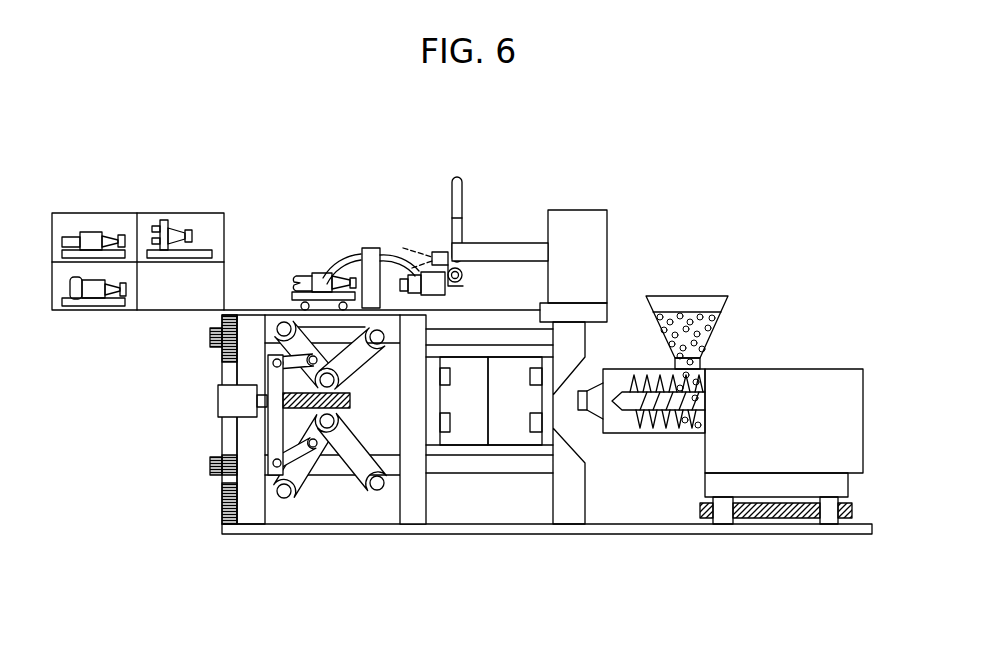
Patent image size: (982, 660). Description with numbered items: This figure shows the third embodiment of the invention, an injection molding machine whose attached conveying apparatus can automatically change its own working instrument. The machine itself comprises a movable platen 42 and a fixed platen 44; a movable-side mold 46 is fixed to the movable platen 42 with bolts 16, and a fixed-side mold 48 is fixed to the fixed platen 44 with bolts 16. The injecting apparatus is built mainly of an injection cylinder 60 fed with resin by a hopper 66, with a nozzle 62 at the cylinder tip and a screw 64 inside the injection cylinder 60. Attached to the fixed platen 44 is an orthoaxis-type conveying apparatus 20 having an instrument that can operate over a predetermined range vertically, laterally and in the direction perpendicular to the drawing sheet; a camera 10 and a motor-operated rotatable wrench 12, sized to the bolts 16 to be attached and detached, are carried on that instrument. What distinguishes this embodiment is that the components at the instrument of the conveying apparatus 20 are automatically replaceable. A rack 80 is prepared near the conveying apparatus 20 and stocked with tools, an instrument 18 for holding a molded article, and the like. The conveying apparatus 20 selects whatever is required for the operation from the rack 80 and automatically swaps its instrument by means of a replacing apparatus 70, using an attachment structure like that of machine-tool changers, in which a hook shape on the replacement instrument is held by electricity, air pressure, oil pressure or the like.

The camera 10 is at (440, 251).
The motor-operated rotatable wrench 12 is at (424, 294).
The bolts 16 is at (450, 376).
The instrument for holding a molded article 18 is at (316, 274).
The orthoaxis-type conveying apparatus 20 is at (580, 210).
The movable platen 42 is at (412, 513).
The fixed platen 44 is at (576, 512).
The movable-side mold 46 is at (448, 447).
The fixed-side mold 48 is at (530, 447).
The injection cylinder 60 is at (657, 433).
The nozzle 62 is at (593, 418).
The screw 64 is at (692, 435).
The hopper 66 is at (687, 295).
The replacing apparatus 70 is at (370, 248).
The rack 80 is at (95, 311).